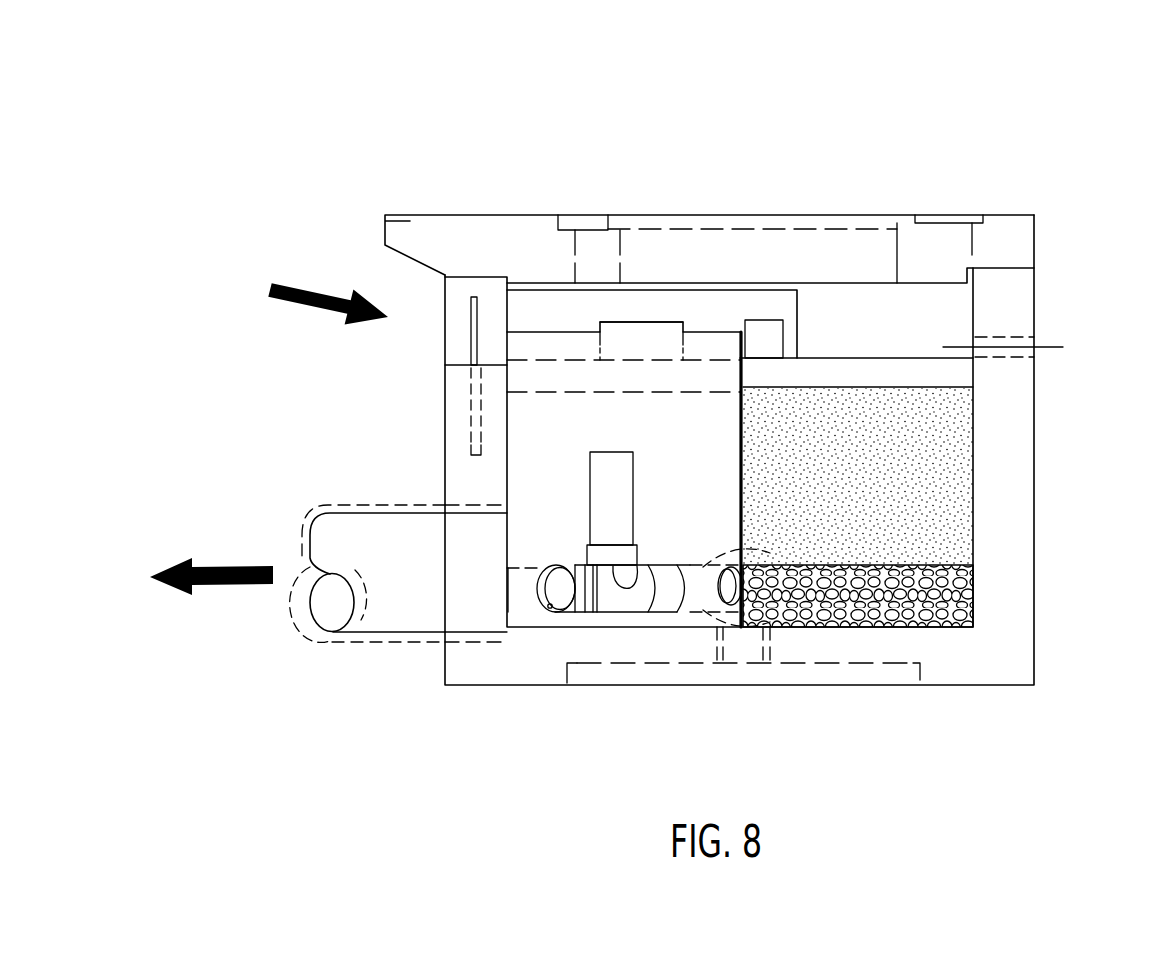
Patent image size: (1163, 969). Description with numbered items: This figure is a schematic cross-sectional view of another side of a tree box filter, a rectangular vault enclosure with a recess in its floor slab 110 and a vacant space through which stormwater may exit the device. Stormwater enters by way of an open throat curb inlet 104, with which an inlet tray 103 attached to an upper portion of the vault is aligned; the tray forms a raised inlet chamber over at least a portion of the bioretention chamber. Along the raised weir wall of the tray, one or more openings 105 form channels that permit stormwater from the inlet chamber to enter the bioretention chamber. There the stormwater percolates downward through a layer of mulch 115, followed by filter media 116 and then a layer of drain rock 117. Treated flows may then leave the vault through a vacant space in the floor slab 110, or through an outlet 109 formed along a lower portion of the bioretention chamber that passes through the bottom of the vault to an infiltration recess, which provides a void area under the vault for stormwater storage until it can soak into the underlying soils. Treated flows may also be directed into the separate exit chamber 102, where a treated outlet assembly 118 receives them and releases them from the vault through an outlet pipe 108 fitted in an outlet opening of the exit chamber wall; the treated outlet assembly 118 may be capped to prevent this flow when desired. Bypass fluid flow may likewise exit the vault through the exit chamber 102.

The exit chamber 102 is at (552, 333).
The inlet tray 103 is at (657, 287).
The open throat curb inlet 104 is at (445, 215).
The openings 105 is at (683, 322).
The outlet pipe 108 is at (392, 632).
The outlet 109 is at (767, 628).
The floor slab 110 is at (922, 687).
The layer of mulch 115 is at (882, 363).
The filter media 116 is at (928, 440).
The layer of drain rock 117 is at (945, 567).
The treated outlet assembly 118 is at (615, 612).